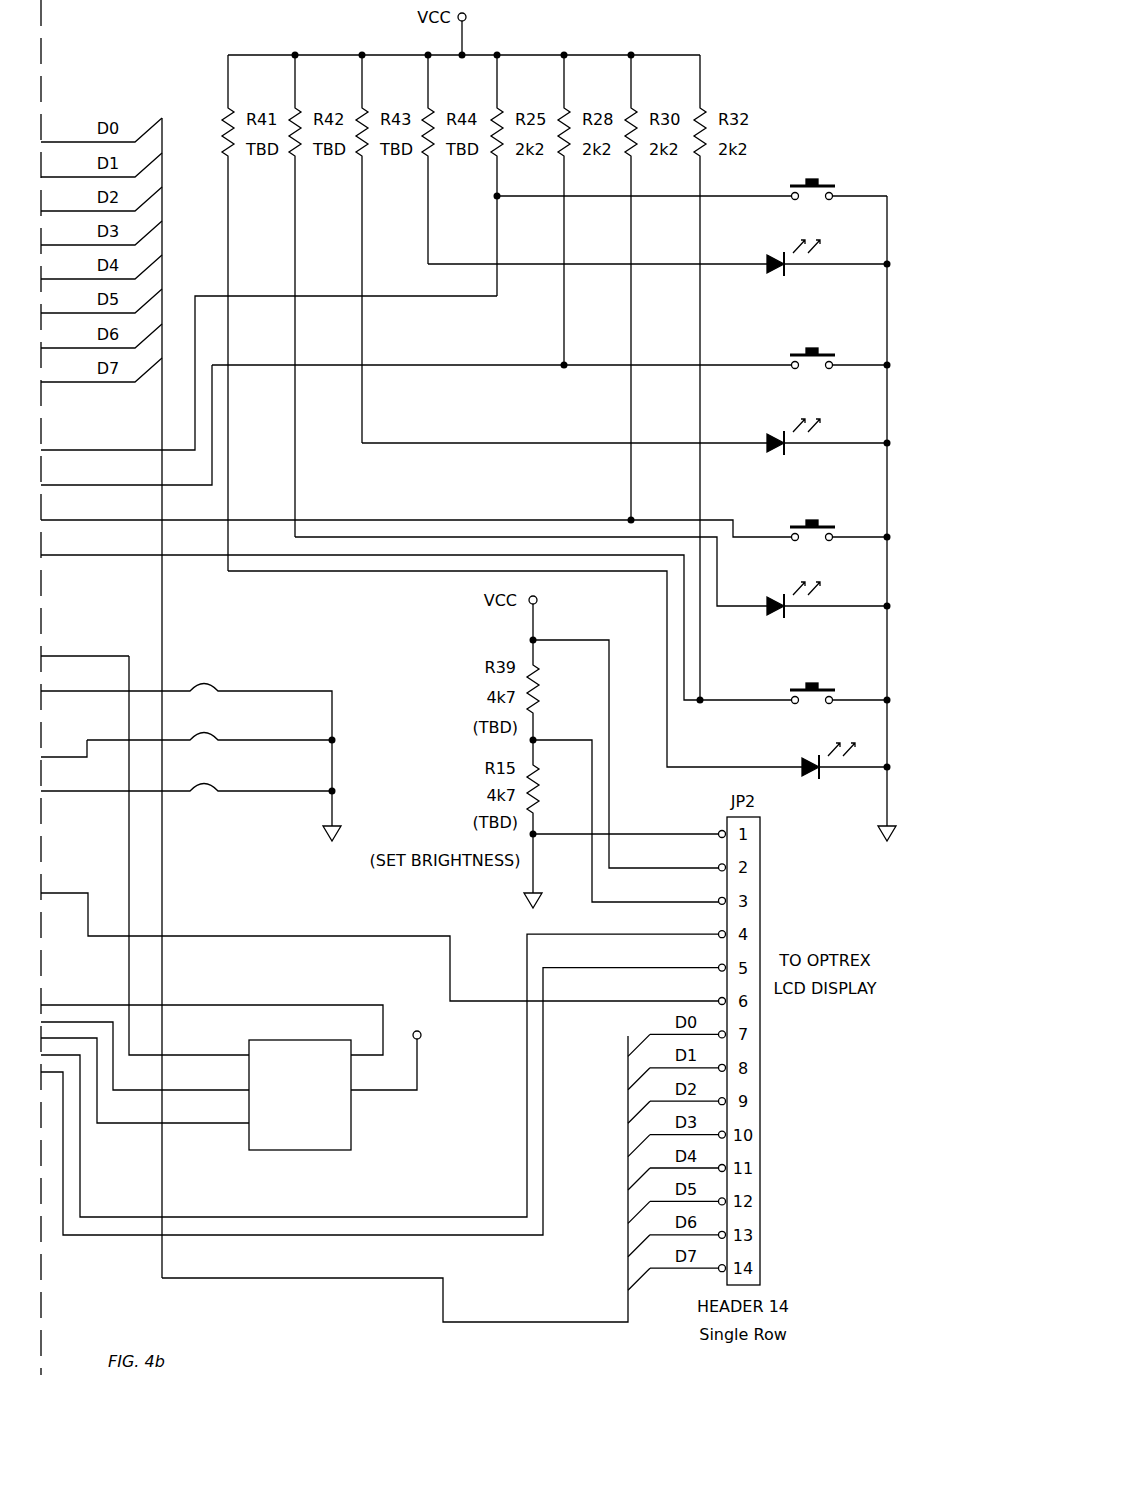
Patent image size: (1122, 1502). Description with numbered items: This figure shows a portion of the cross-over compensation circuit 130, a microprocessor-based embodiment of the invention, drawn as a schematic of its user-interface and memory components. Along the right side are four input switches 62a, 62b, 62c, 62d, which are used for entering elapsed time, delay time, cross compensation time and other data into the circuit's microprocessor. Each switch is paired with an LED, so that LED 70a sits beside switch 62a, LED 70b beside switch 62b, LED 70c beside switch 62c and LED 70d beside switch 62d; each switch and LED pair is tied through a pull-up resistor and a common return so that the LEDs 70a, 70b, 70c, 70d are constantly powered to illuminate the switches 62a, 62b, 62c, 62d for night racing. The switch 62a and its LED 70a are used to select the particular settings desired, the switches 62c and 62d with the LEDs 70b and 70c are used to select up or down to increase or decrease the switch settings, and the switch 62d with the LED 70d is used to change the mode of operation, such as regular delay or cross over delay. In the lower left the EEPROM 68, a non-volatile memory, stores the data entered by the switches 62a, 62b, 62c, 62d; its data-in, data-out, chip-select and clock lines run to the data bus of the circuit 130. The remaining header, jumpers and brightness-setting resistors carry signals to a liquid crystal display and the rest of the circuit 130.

The input switch 62a is at (840, 166).
The input switch 62b is at (793, 338).
The input switch 62c is at (793, 507).
The input switch 62d is at (793, 666).
The LED 70a is at (800, 273).
The LED 70b is at (800, 457).
The LED 70c is at (808, 618).
The LED 70d is at (835, 778).
The EEPROM 68 is at (351, 1130).
The cross-over compensation circuit 130 is at (251, 880).